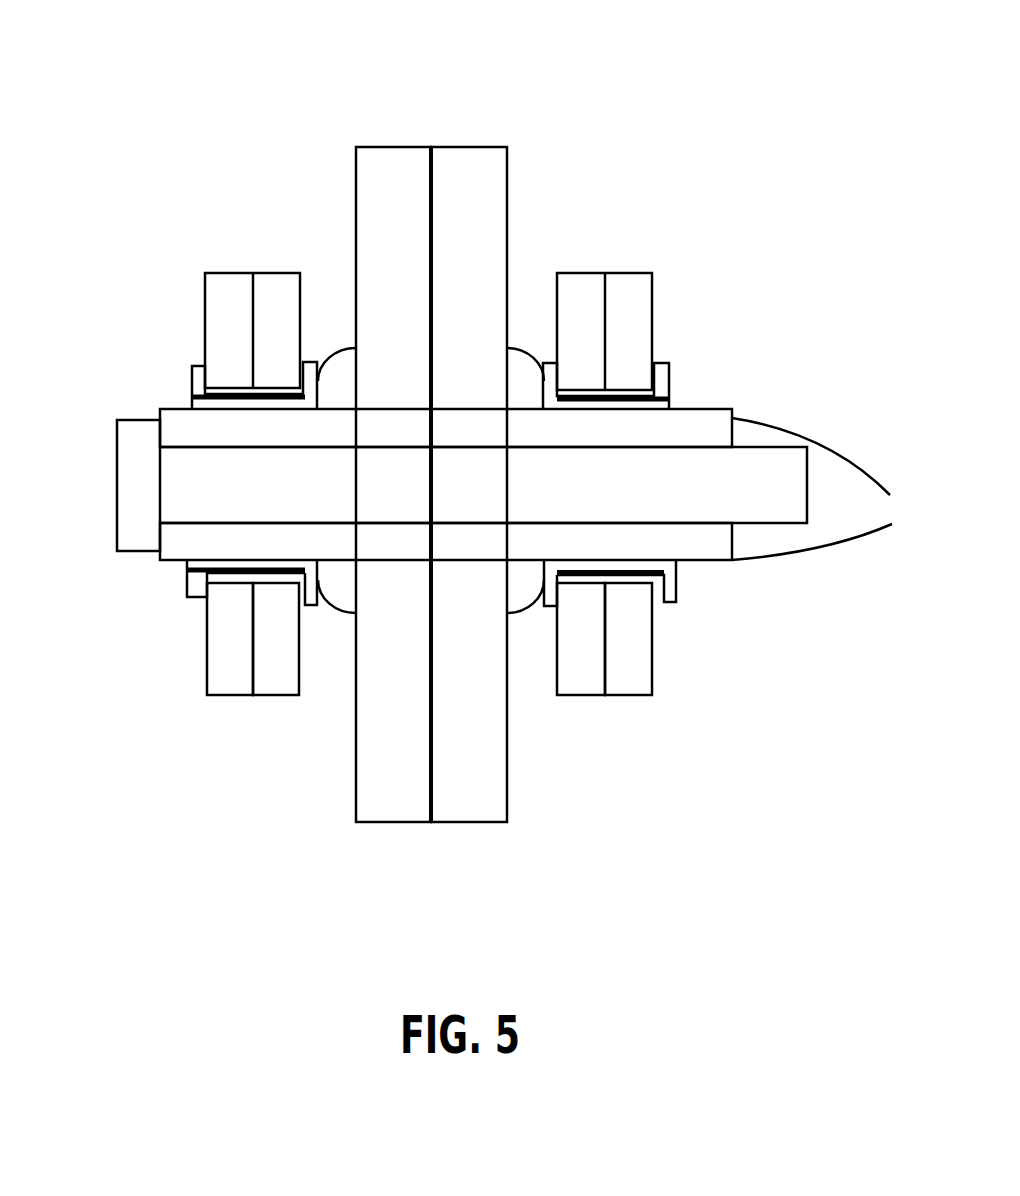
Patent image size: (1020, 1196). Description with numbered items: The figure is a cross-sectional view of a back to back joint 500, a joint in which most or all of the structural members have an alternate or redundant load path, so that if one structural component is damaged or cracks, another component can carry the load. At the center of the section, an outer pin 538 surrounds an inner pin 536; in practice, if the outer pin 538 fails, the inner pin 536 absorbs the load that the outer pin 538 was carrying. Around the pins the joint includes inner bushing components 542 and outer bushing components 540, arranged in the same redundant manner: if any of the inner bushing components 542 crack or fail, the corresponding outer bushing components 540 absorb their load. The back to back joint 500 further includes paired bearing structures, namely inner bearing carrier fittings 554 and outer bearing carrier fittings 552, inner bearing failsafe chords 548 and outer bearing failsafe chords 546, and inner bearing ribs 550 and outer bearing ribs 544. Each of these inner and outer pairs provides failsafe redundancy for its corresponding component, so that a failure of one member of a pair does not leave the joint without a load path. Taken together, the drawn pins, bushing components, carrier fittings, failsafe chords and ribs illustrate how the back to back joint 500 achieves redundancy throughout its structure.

The back to back joint 500 is at (597, 126).
The inner pin 536 is at (103, 493).
The outer pin 538 is at (820, 489).
The outer bushing components 540 is at (182, 582).
The inner bushing components 542 is at (318, 607).
The outer bearing ribs 544 is at (208, 695).
The outer bearing failsafe chords 546 is at (272, 695).
The inner bearing failsafe chords 548 is at (589, 697).
The inner bearing ribs 550 is at (653, 697).
The outer bearing carrier fittings 552 is at (383, 823).
The inner bearing carrier fittings 554 is at (478, 823).